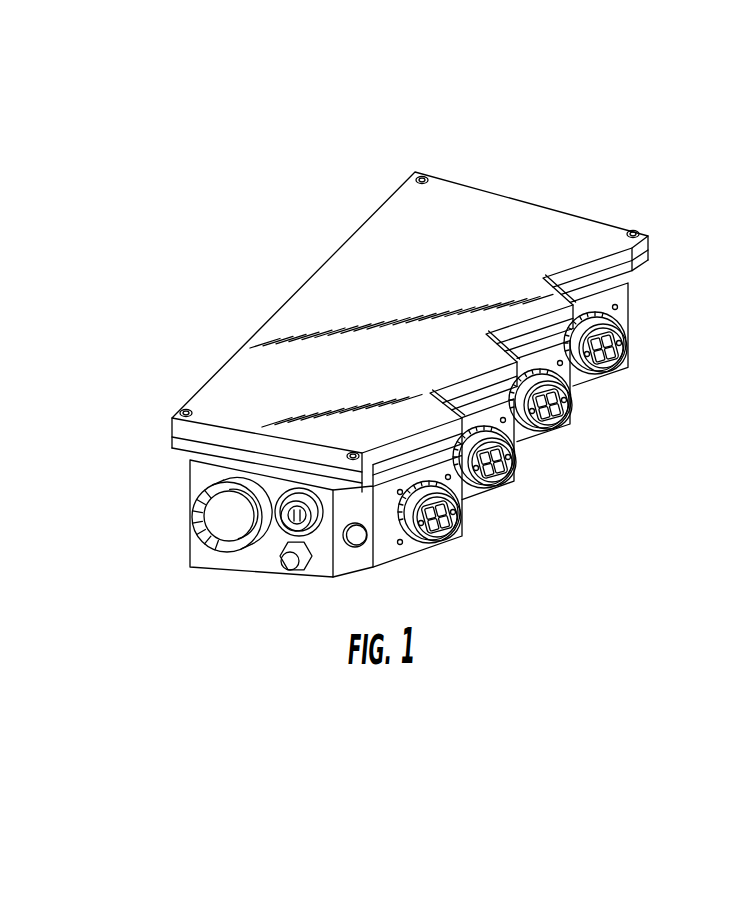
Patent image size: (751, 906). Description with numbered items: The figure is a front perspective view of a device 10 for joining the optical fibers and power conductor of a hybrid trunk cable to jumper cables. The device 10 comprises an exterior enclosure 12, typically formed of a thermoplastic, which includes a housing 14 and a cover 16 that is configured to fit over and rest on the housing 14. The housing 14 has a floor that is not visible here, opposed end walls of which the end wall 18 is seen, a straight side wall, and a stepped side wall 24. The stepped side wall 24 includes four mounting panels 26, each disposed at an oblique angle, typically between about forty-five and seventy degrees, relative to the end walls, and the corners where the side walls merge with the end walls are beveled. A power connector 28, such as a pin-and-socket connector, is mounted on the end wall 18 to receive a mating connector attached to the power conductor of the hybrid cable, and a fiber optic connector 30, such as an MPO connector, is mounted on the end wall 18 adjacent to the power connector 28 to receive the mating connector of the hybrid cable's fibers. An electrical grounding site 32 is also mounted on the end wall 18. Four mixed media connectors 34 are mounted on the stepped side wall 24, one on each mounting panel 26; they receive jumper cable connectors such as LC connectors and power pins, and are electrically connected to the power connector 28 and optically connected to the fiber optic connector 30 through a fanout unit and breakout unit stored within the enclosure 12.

The device 10 is at (387, 126).
The exterior enclosure 12 is at (299, 650).
The housing 14 is at (663, 285).
The cover 16 is at (530, 232).
The end wall 18 is at (273, 540).
The stepped side wall 24 is at (630, 416).
The mounting panels 26 is at (620, 315).
The power connector 28 is at (196, 508).
The fiber optic connector 30 is at (289, 512).
The electrical grounding site 32 is at (287, 568).
The mixed media connectors 34 is at (485, 485).